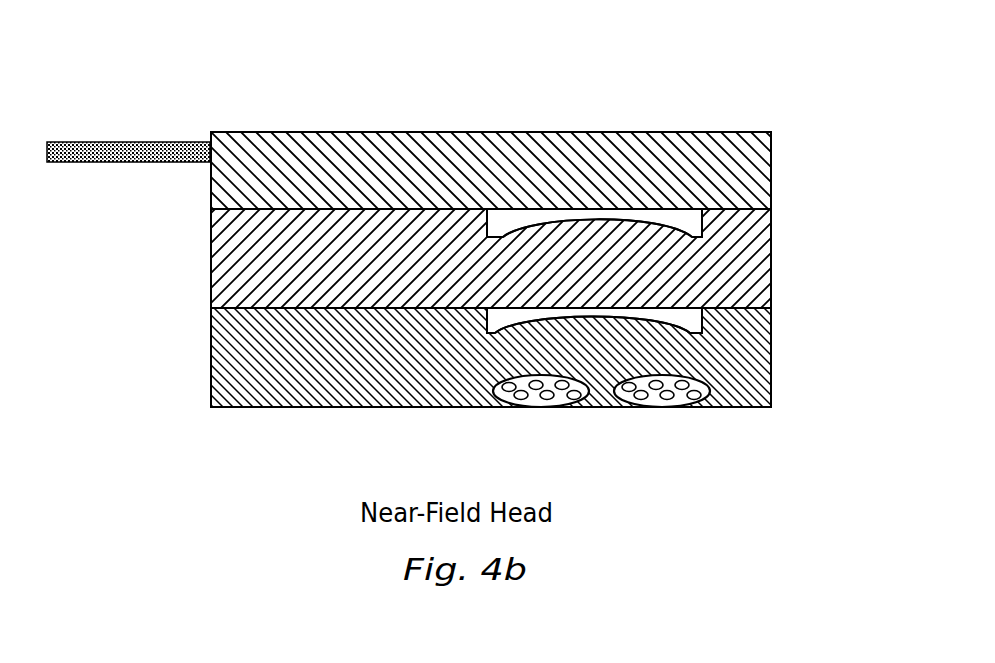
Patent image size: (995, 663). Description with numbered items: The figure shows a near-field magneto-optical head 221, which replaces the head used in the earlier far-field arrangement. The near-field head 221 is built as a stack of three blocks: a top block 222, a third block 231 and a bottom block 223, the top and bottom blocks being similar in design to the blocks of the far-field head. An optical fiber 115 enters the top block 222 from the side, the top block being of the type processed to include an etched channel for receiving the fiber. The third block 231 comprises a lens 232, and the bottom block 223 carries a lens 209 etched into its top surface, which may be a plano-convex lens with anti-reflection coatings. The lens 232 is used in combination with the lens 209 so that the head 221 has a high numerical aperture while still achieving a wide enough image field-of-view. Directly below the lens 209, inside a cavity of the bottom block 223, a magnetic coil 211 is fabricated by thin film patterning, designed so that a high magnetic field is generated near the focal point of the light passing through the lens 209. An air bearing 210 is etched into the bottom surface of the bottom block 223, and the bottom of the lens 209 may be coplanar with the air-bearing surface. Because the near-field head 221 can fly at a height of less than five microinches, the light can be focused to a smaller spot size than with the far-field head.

The optical fiber 115 is at (167, 142).
The near-field head 221 is at (777, 34).
The top block 222 is at (765, 178).
The third block 231 is at (762, 254).
The lens 232 is at (530, 222).
The bottom block 223 is at (762, 347).
The lens 209 is at (527, 322).
The magnetic coil 211 is at (663, 400).
The air bearing 210 is at (277, 407).